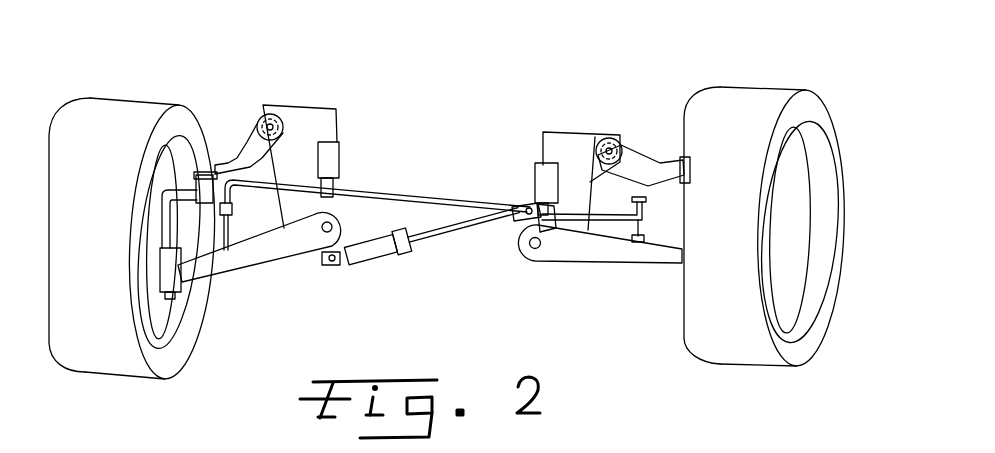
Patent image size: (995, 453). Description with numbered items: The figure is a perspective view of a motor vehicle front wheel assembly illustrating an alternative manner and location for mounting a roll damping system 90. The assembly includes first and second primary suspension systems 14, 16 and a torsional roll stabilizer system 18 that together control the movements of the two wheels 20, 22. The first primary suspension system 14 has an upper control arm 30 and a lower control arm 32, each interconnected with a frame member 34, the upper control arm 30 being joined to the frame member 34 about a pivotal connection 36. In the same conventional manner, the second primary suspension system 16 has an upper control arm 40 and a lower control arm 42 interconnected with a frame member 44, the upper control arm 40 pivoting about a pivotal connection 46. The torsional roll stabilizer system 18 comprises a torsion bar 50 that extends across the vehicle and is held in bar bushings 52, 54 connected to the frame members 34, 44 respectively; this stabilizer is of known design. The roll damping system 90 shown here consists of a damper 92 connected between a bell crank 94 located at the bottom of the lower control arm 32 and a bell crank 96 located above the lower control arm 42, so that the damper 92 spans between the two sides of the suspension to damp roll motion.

The first primary suspension system 14 is at (238, 72).
The second primary suspension system 16 is at (641, 118).
The torsional roll stabilizer system 18 is at (250, 215).
The wheel 20 is at (174, 362).
The wheel 22 is at (707, 341).
The upper control arm 30 is at (247, 152).
The lower control arm 32 is at (227, 262).
The frame member 34 is at (303, 117).
The pivotal connection 36 is at (269, 108).
The upper control arm 40 is at (649, 160).
The lower control arm 42 is at (612, 254).
The frame member 44 is at (555, 137).
The pivotal connection 46 is at (608, 147).
The torsion bar 50 is at (410, 192).
The bar bushing 52 is at (334, 187).
The bar bushing 54 is at (546, 202).
The roll damping system 90 is at (380, 286).
The damper 92 is at (384, 250).
The bell crank 94 is at (318, 262).
The bell crank 96 is at (548, 224).